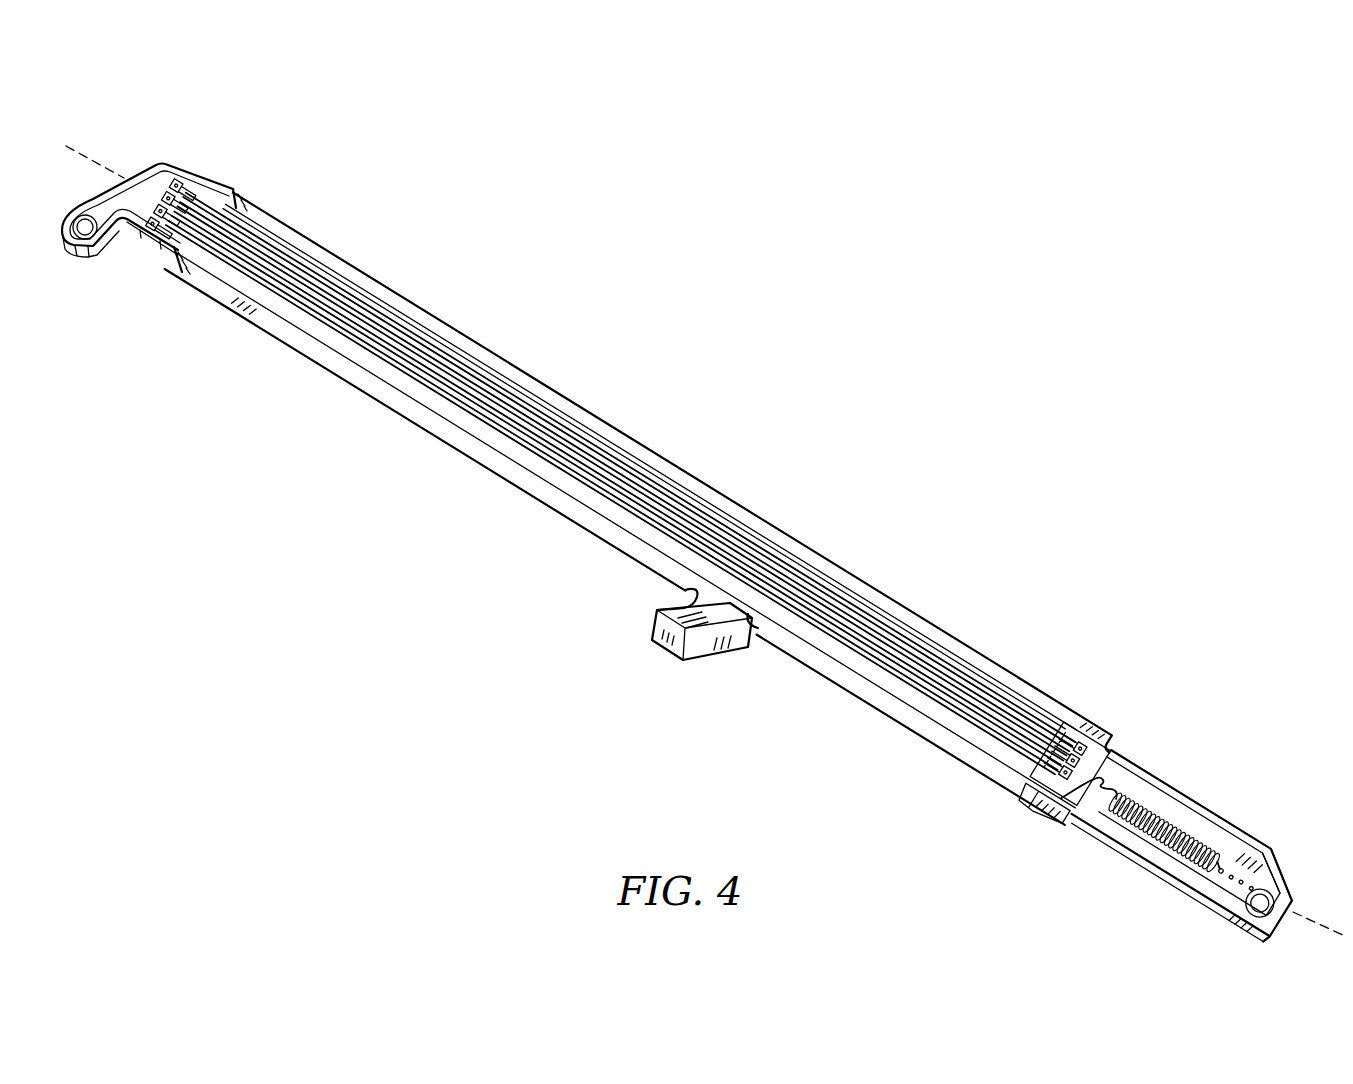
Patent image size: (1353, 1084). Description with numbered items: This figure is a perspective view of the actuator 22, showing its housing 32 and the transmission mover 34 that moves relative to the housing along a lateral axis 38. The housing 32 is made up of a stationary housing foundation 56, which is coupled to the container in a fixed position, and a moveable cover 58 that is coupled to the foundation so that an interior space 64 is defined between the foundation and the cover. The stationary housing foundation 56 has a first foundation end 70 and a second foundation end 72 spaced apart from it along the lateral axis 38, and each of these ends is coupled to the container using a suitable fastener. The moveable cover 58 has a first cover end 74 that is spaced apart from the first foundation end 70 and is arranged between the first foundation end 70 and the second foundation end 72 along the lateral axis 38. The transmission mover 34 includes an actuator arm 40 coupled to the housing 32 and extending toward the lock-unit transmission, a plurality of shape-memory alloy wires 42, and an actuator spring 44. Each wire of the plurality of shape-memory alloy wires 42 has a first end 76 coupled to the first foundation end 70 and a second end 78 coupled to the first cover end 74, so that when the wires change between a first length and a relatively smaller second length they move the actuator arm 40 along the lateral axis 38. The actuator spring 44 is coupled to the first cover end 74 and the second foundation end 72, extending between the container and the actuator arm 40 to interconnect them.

The actuator 22 is at (1043, 298).
The housing 32 is at (1141, 722).
The transmission mover 34 is at (602, 618).
The lateral axis 38 is at (1310, 908).
The actuator arm 40 is at (660, 664).
The plurality of shape-memory alloy wires 42 is at (634, 519).
The actuator spring 44 is at (1157, 838).
The stationary housing foundation 56 is at (1183, 788).
The moveable cover 58 is at (1040, 680).
The interior space 64 is at (218, 198).
The first foundation end 70 is at (126, 178).
The second foundation end 72 is at (1265, 842).
The first cover end 74 is at (1050, 818).
The first end 76 is at (183, 168).
The second end 78 is at (1035, 785).